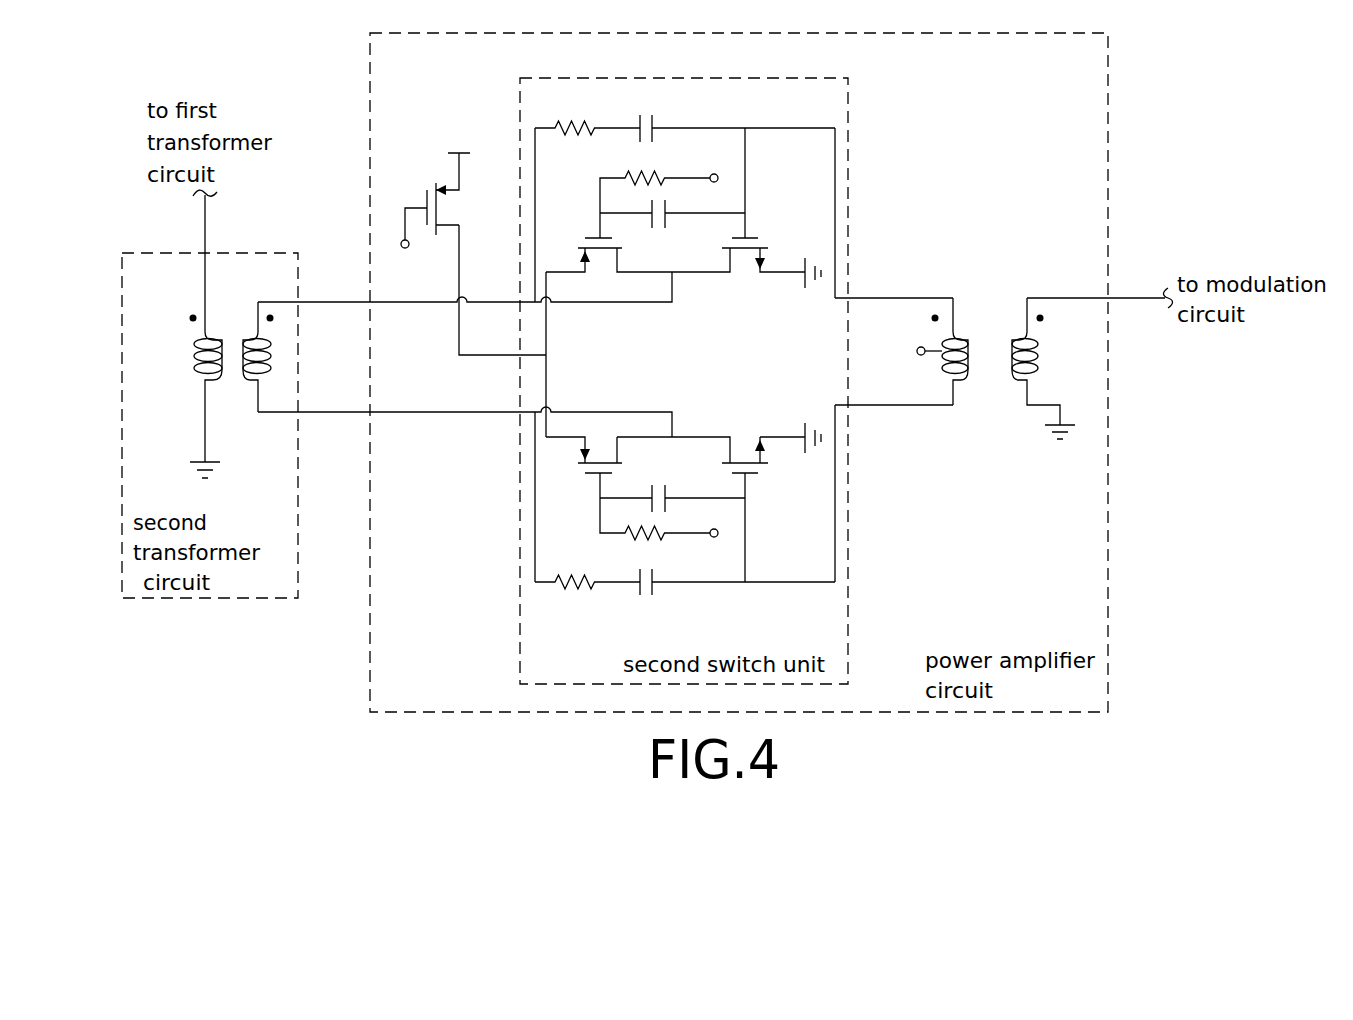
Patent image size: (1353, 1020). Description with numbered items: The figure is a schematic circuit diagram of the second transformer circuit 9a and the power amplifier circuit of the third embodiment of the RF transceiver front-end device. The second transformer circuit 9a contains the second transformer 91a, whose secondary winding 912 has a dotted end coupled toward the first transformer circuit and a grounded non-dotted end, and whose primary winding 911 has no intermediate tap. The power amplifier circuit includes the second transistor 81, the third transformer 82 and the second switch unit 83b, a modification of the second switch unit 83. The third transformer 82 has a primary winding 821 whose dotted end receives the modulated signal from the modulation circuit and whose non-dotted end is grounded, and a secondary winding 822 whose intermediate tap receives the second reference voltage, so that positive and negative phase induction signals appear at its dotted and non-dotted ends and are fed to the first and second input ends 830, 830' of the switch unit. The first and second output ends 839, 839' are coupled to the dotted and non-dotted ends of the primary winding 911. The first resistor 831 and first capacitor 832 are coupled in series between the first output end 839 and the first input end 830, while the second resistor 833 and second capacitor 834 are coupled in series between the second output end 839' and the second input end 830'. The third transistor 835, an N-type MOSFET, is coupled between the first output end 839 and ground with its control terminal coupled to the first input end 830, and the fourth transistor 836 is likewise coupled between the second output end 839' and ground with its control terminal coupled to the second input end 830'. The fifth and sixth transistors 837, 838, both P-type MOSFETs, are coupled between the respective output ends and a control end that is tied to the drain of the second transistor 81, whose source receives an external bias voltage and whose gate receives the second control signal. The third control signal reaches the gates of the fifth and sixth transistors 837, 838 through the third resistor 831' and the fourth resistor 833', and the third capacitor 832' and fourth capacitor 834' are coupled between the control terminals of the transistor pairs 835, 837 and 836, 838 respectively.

The second switch unit 83 is at (1005, 33).
The second switch unit 83b is at (822, 78).
The second transformer circuit 9a is at (230, 253).
The second transformer 91a is at (210, 342).
The secondary winding 912 is at (194, 357).
The primary winding 911 is at (268, 343).
The second transistor 81 is at (462, 208).
The first output end 839 is at (465, 309).
The second output end 839' is at (465, 445).
The first resistor 831 is at (590, 111).
The first capacitor 832 is at (737, 114).
The third resistor 831' is at (644, 181).
The third capacitor 832' is at (672, 235).
The second resistor 833 is at (588, 610).
The second capacitor 834 is at (737, 607).
The fourth resistor 833' is at (634, 533).
The fourth capacitor 834' is at (672, 440).
The third transistor 835 is at (752, 275).
The fourth transistor 836 is at (752, 436).
The fifth transistor 837 is at (603, 272).
The sixth transistor 838 is at (599, 434).
The first input end 830 is at (894, 264).
The second input end 830' is at (894, 441).
The third transformer 82 is at (971, 356).
The secondary winding 822 is at (956, 380).
The primary winding 821 is at (1008, 380).